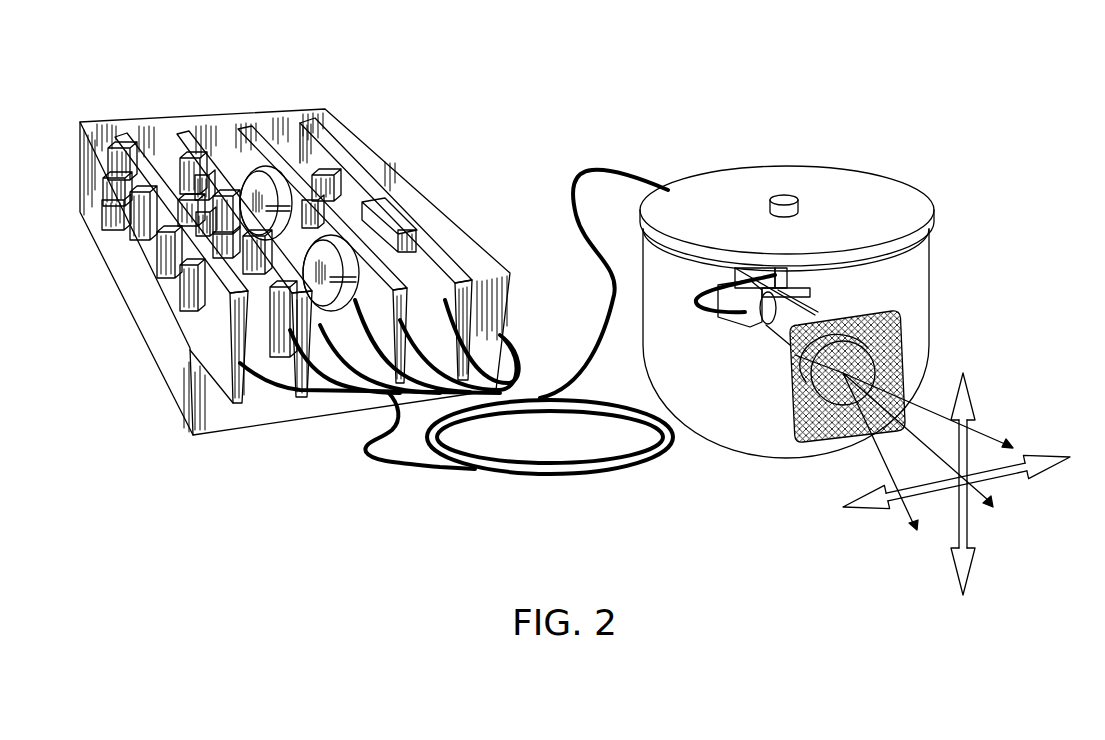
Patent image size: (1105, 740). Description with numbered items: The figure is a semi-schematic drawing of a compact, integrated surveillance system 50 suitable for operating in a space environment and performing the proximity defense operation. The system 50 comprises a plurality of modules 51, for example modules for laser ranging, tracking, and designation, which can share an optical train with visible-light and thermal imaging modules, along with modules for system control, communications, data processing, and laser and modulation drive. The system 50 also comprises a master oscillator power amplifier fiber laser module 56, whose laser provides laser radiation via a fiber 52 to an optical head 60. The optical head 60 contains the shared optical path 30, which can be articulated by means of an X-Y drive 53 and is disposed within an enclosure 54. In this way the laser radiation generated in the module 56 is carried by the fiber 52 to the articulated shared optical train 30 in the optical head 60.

The shared optical path 30 is at (773, 357).
The integrated surveillance system 50 is at (258, 54).
The modules 51 is at (307, 120).
The fiber 52 is at (567, 474).
The X-Y drive 53 is at (740, 327).
The enclosure 54 is at (935, 310).
The master oscillator power amplifier fiber laser module 56 is at (290, 373).
The optical head 60 is at (863, 356).